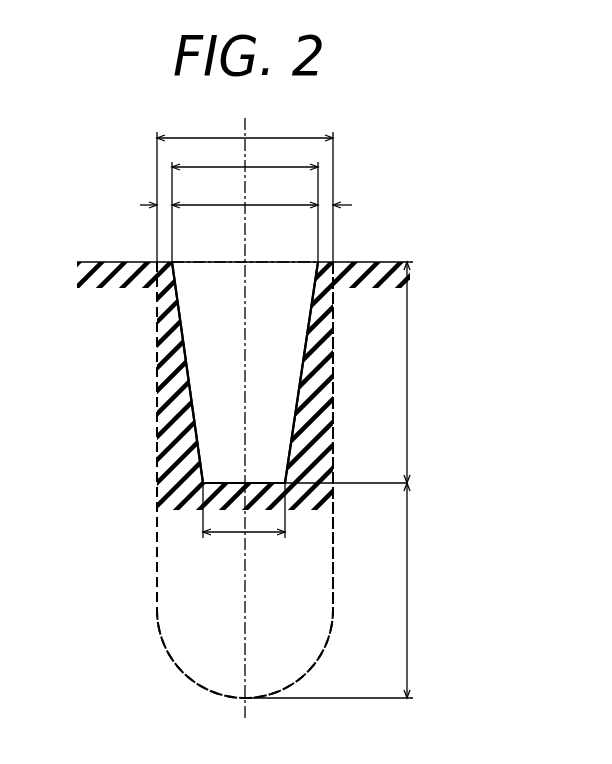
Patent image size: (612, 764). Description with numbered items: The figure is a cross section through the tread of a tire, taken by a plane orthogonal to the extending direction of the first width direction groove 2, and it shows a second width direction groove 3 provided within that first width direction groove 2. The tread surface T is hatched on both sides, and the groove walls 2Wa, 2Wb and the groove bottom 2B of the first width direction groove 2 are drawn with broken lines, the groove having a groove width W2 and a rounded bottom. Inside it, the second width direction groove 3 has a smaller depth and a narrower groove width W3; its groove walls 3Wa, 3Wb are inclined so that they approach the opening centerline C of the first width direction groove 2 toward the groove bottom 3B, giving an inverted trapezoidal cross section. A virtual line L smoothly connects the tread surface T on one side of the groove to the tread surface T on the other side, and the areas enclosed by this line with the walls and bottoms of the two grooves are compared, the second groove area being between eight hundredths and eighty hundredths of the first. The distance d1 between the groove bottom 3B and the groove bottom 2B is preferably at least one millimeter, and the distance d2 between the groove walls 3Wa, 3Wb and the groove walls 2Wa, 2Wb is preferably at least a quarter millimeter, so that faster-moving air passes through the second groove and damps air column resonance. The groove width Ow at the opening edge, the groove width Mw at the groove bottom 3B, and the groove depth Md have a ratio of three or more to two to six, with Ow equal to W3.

The tread surface T is at (101, 262).
The second width direction groove 3 is at (256, 377).
The groove wall of second width direction groove 3Wa is at (185, 347).
The groove wall of second width direction groove 3Wb is at (305, 350).
The groove bottom of second width direction groove 3B is at (263, 482).
The first width direction groove 2 is at (256, 606).
The groove wall of first width direction groove 2Wa is at (157, 545).
The groove wall of first width direction groove 2Wb is at (333, 545).
The groove bottom of first width direction groove 2B is at (240, 697).
The opening centerline C is at (245, 408).
The virtual line L is at (223, 262).
The groove width of first width direction groove W2 is at (245, 188).
The groove width of second width direction groove W3 is at (245, 202).
The groove width at opening edge Ow is at (245, 195).
The distance between groove walls d2 is at (250, 204).
The groove depth of second width direction groove Md is at (422, 372).
The distance between groove bottoms d1 is at (339, 590).
The groove width in groove bottom Mw is at (244, 520).